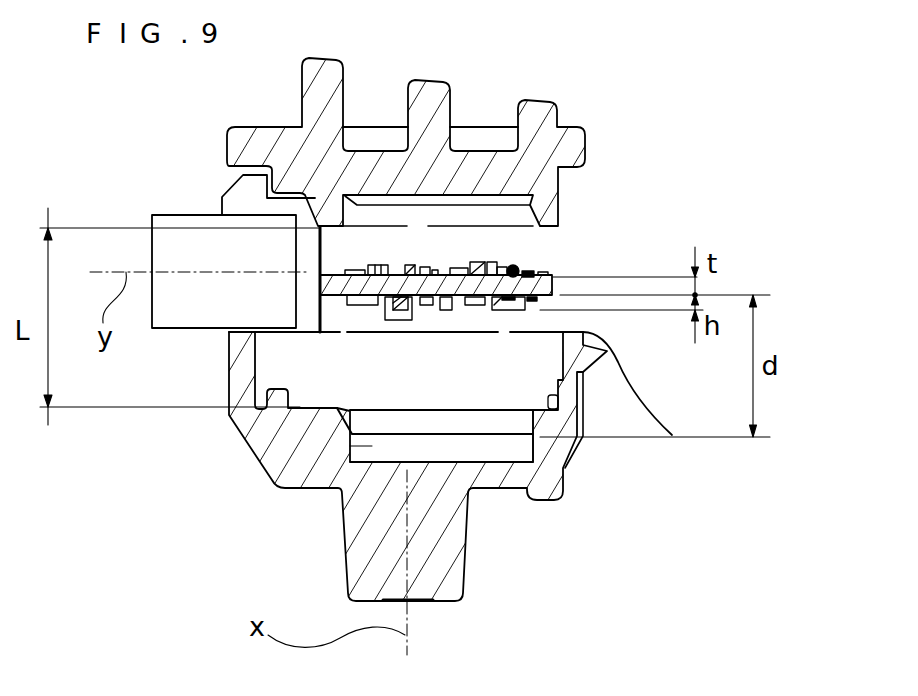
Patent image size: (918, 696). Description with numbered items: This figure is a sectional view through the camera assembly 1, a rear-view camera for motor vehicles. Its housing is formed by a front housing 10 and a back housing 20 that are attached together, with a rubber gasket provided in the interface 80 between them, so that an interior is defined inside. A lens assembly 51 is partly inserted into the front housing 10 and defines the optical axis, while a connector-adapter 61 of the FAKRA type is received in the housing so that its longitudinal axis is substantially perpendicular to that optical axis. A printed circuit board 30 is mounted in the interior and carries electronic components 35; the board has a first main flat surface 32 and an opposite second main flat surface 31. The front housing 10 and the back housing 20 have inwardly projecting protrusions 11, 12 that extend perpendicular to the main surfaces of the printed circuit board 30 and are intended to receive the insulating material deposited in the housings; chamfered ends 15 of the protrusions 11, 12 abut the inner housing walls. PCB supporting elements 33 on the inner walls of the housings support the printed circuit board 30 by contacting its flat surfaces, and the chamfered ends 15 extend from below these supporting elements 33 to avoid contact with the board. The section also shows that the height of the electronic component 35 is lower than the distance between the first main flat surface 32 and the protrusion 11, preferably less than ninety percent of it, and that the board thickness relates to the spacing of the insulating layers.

The camera assembly 1 is at (503, 78).
The front housing 10 is at (592, 357).
The protrusion 11 is at (316, 207).
The protrusion 12 is at (400, 202).
The chamfered ends 15 is at (340, 423).
The back housing 20 is at (573, 142).
The printed circuit board 30 is at (560, 268).
The second main flat surface 31 is at (557, 268).
The first main flat surface 32 is at (457, 298).
The PCB supporting elements 33 is at (537, 418).
The electronic component 35 is at (555, 270).
The lens assembly 51 is at (367, 446).
The connector-adapter 61 is at (194, 322).
The interface 80 is at (587, 177).